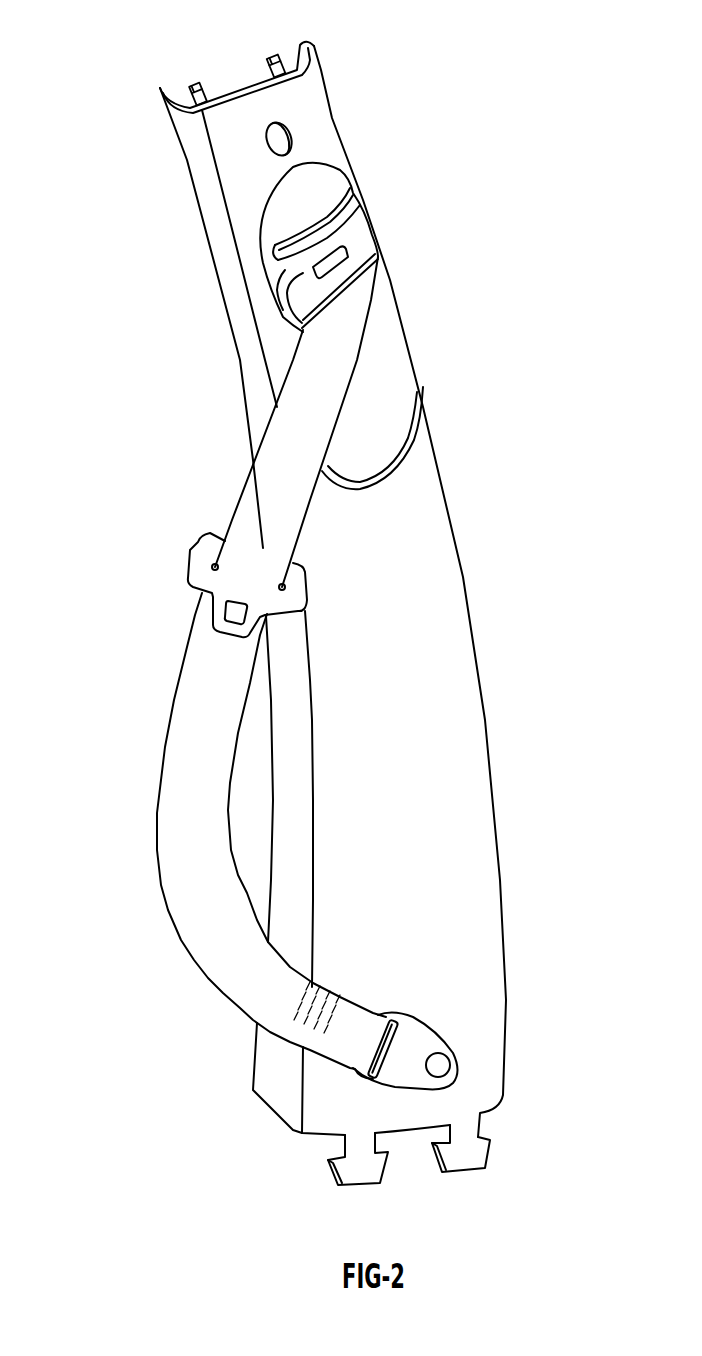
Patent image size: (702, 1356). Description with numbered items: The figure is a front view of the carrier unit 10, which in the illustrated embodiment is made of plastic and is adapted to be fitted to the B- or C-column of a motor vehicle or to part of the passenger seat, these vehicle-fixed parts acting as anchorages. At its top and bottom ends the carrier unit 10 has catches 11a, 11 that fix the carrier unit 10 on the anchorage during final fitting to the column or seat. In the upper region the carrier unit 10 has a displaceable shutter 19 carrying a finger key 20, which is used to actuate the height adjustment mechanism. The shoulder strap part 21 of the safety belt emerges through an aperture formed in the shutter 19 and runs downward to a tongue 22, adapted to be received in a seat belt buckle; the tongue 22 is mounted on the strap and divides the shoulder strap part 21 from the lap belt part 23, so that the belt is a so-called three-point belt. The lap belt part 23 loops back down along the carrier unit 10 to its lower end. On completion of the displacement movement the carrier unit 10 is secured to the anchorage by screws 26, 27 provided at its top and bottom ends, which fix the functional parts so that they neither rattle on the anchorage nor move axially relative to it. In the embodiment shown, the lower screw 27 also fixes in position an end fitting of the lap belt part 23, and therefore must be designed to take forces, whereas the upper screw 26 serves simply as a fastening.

The carrier unit 10 is at (430, 553).
The catch 11 is at (470, 1157).
The catch 11a is at (265, 62).
The displaceable shutter 19 is at (388, 353).
The finger key 20 is at (347, 210).
The shoulder strap part 21 is at (300, 425).
The tongue 22 is at (217, 565).
The lap belt part 23 is at (167, 827).
The screw 26 is at (290, 135).
The screw 27 is at (447, 1060).